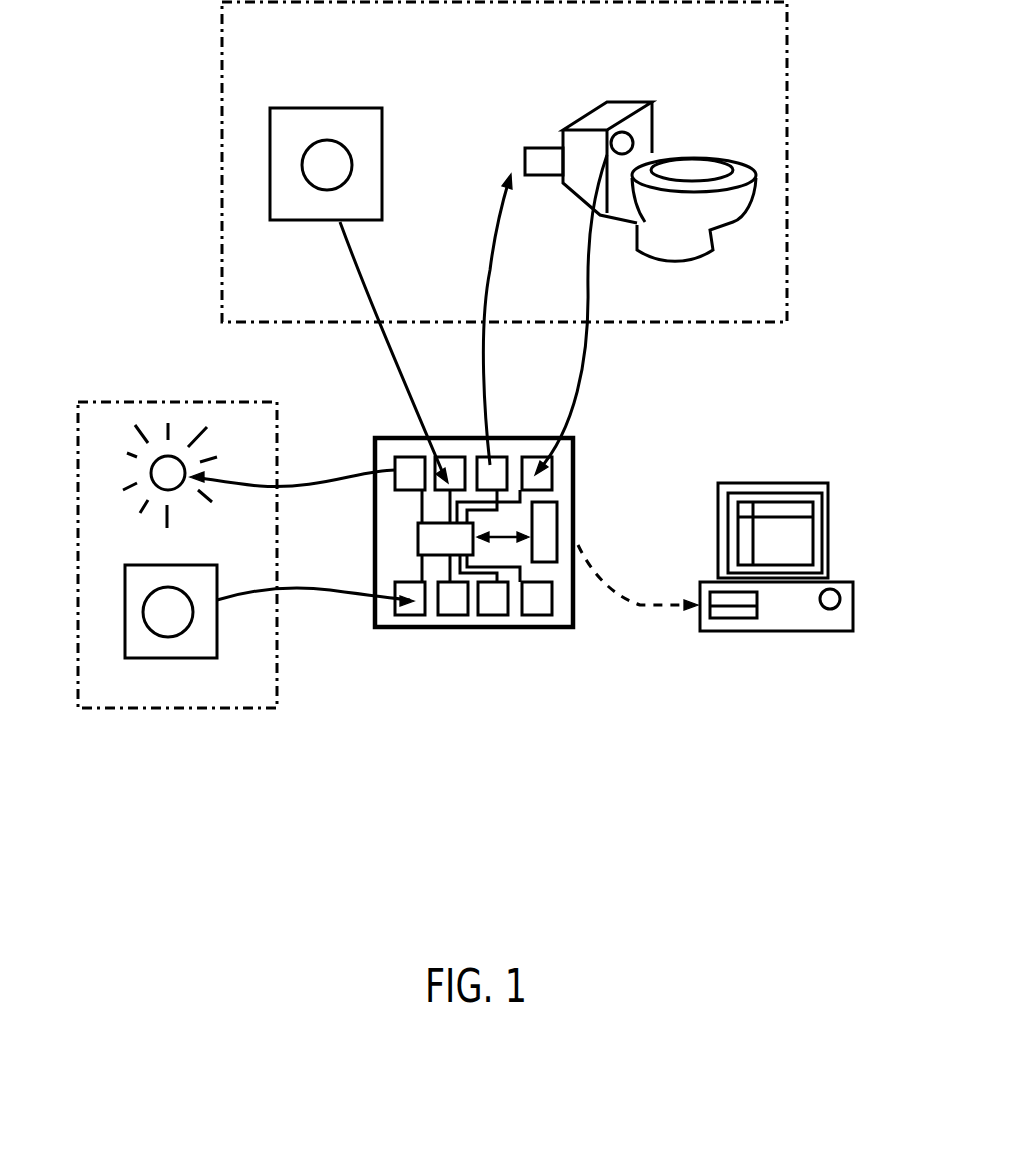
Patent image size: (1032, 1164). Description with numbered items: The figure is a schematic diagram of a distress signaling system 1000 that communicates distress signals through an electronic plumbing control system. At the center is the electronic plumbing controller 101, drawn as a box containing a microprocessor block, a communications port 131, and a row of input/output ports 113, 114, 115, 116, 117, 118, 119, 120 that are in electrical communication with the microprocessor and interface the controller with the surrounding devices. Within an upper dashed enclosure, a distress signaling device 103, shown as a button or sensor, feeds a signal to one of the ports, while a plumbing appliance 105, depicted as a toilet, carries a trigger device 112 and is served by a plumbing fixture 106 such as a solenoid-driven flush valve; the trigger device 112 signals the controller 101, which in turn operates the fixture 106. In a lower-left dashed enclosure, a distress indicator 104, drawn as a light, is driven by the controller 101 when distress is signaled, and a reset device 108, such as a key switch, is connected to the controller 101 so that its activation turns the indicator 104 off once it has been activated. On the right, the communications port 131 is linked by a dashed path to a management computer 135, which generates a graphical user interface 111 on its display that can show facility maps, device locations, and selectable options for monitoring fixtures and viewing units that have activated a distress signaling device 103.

The electronic plumbing controller 101 is at (398, 628).
The distress signaling device 103 is at (352, 160).
The distress indicator 104 is at (152, 487).
The plumbing appliance 105 is at (652, 100).
The plumbing fixture 106 is at (533, 148).
The reset device 108 is at (200, 658).
The graphical user interface 111 is at (800, 518).
The trigger device 112 is at (634, 142).
The input/output port 113 is at (416, 607).
The input/output port 114 is at (444, 594).
The input/output port 115 is at (489, 594).
The input/output port 116 is at (566, 628).
The input/output port 117 is at (548, 478).
The input/output port 118 is at (493, 468).
The input/output port 119 is at (456, 467).
The input/output port 120 is at (413, 480).
The communications port 131 is at (546, 551).
The management computer 135 is at (812, 542).
The distress signaling system 1000 is at (683, 752).